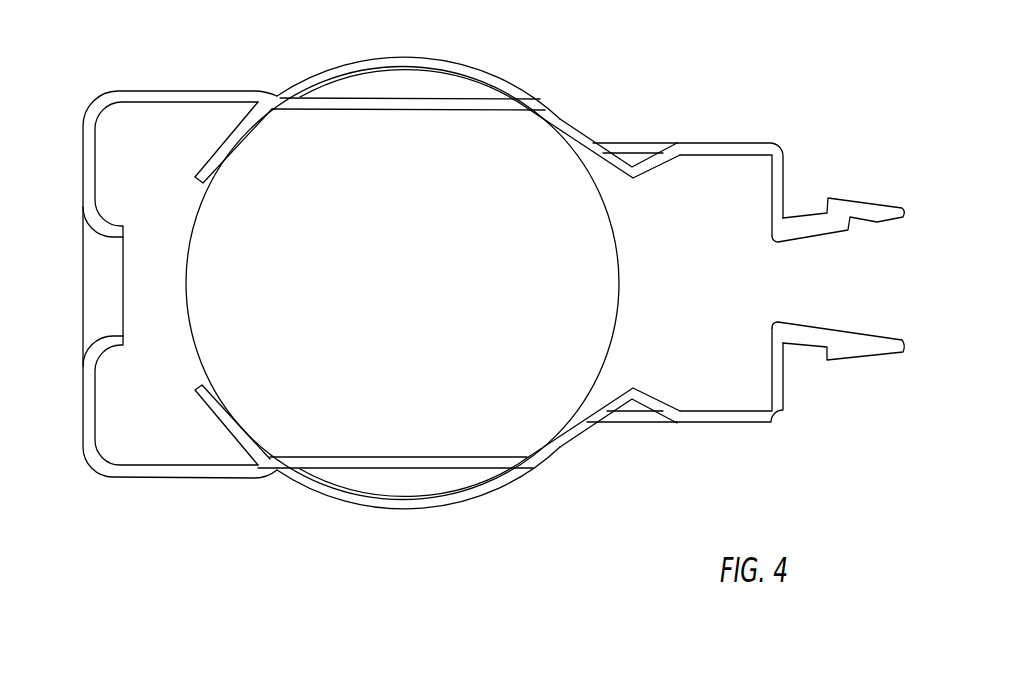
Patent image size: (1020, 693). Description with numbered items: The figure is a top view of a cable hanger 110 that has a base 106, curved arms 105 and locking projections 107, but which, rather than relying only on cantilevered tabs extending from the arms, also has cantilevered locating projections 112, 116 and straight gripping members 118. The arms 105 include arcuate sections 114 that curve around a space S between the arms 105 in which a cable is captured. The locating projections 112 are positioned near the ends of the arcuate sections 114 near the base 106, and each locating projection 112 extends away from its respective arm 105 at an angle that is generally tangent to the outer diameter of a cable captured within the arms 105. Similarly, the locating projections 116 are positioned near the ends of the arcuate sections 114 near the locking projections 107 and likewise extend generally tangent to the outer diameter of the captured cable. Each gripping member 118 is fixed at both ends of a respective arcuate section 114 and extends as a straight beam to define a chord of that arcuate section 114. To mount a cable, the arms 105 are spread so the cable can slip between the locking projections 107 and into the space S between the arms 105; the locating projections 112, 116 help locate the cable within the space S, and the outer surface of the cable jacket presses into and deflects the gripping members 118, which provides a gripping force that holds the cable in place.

The curved arm 105 is at (302, 558).
The base 106 is at (92, 448).
The locking projection 107 is at (838, 348).
The hanger 110 is at (781, 105).
The locating projection 112 is at (235, 135).
The arcuate section 114 is at (345, 72).
The locating projection 116 is at (602, 160).
The gripping member 118 is at (470, 100).
The space S is at (413, 291).